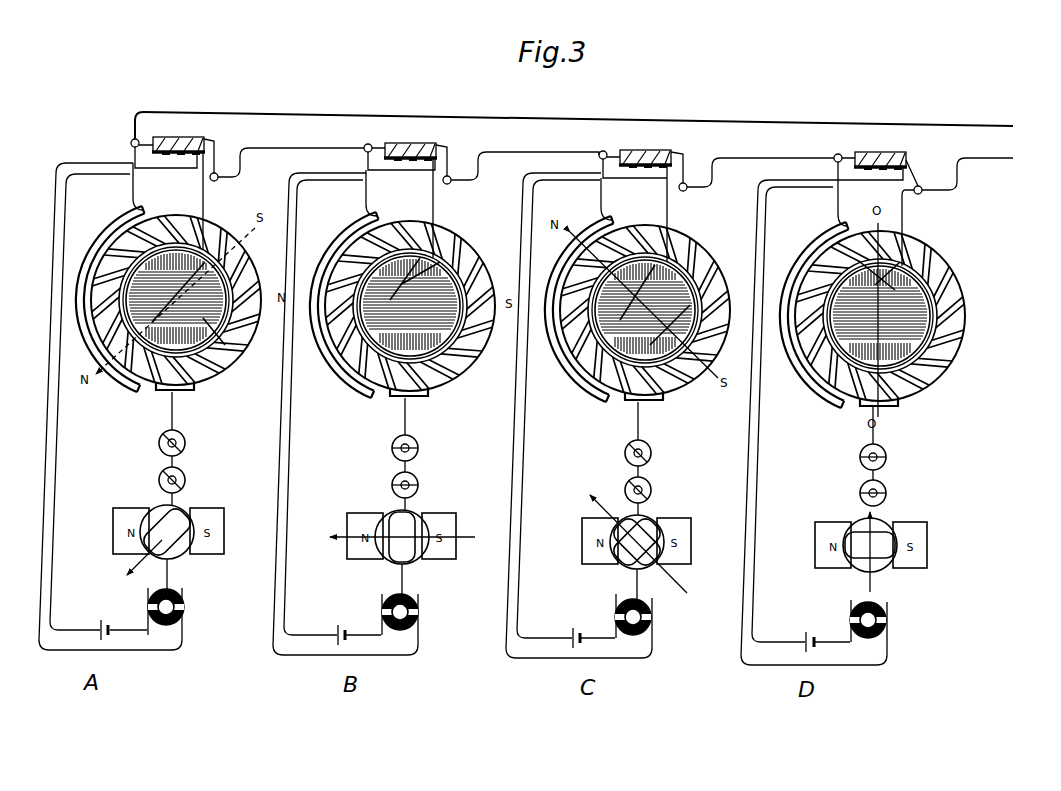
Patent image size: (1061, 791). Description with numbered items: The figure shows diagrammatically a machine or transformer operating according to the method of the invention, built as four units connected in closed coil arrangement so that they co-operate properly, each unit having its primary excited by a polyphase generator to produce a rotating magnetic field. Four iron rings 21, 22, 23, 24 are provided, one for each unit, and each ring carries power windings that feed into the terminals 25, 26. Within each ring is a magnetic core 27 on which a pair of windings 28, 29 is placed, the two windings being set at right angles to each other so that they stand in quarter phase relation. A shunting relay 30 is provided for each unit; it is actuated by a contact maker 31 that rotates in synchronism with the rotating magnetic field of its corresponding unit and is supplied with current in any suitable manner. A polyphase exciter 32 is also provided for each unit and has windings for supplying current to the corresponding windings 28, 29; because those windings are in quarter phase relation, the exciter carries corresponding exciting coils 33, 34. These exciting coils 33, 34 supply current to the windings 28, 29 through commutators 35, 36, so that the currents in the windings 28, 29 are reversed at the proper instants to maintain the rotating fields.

The iron ring 21 is at (238, 262).
The iron ring 22 is at (460, 249).
The iron ring 23 is at (695, 256).
The iron ring 24 is at (935, 259).
The terminal 25 is at (990, 123).
The terminal 26 is at (1000, 162).
The magnetic core 27 is at (222, 366).
The winding 28 is at (226, 330).
The winding 29 is at (205, 262).
The shunting relay 30 is at (185, 135).
The contact maker 31 is at (177, 588).
The polyphase exciter 32 is at (184, 505).
The exciting coil 33 is at (183, 553).
The exciting coil 34 is at (195, 510).
The commutator 35 is at (187, 440).
The commutator 36 is at (184, 475).